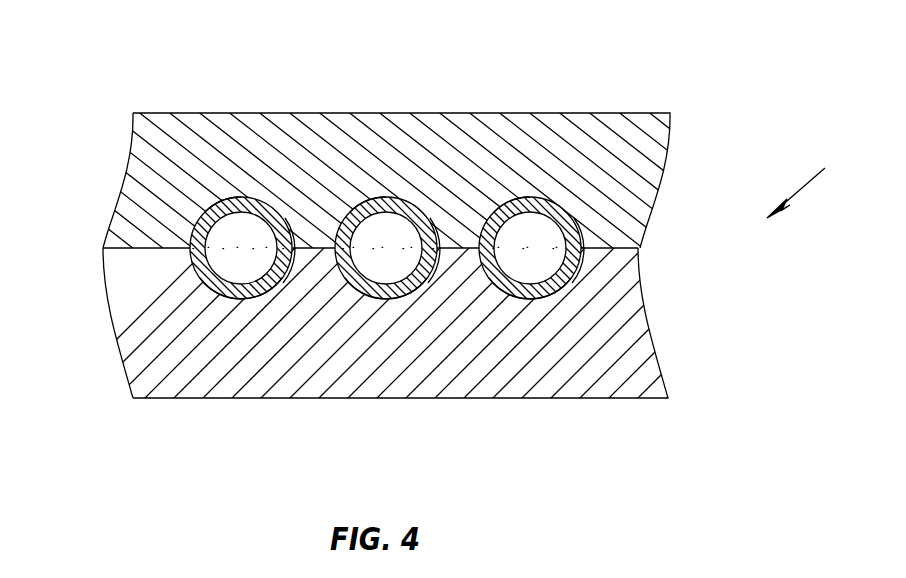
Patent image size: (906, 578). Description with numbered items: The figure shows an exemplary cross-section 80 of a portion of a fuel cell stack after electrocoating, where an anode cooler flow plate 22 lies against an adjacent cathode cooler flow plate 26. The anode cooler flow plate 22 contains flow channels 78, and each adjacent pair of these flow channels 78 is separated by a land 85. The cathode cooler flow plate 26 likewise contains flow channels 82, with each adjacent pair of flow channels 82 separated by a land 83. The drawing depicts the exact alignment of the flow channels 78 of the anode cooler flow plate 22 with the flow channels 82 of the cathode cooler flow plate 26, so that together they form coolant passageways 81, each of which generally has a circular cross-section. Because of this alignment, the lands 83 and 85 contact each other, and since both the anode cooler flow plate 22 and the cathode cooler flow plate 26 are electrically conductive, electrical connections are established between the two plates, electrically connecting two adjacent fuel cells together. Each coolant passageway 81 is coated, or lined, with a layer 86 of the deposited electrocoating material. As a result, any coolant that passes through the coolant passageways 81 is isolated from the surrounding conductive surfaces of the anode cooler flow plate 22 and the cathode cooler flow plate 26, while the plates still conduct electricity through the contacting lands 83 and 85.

The anode cooler flow plate 22 is at (523, 113).
The cathode cooler flow plate 26 is at (653, 337).
The flow channels 78 is at (236, 197).
The cross-section 80 is at (810, 180).
The coolant passageways 81 is at (201, 215).
The flow channels 82 is at (132, 388).
The land 83 is at (112, 298).
The land 85 is at (117, 243).
The layer 86 is at (230, 238).